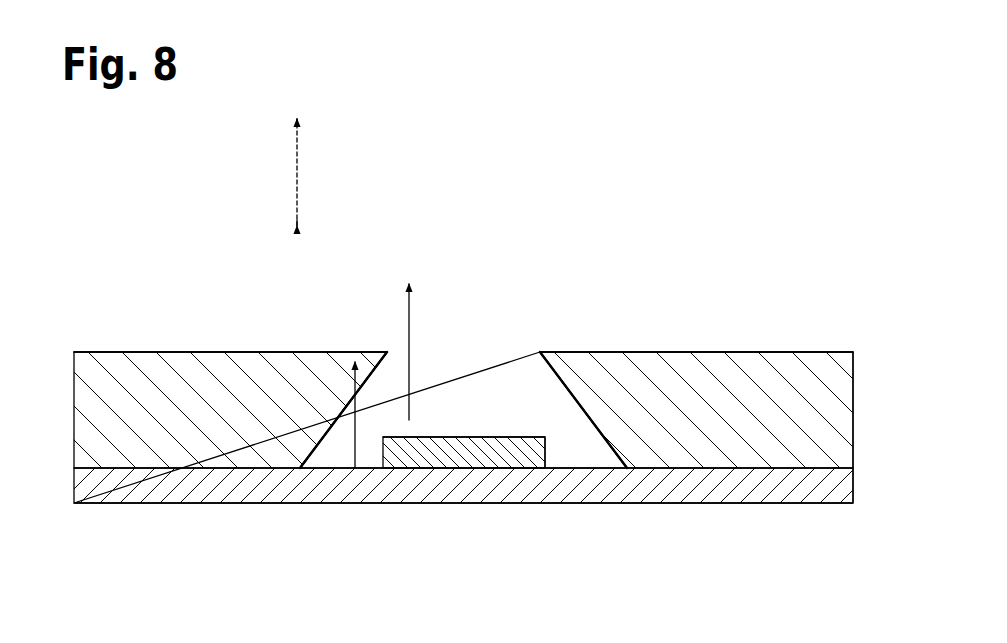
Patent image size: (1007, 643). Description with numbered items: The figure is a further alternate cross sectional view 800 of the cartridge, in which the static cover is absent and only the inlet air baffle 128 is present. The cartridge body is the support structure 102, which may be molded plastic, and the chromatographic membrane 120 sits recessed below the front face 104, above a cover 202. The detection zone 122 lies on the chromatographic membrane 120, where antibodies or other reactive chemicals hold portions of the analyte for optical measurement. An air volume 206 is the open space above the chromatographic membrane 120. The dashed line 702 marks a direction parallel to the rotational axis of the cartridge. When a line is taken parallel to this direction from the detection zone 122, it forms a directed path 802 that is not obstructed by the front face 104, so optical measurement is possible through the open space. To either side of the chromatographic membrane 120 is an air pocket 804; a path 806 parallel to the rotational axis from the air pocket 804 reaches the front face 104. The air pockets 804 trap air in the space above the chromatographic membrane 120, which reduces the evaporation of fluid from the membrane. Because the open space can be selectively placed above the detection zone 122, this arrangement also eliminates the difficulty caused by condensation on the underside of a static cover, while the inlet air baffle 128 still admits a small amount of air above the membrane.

The cross sectional view 800 is at (113, 281).
The direction parallel to rotational axis 702 is at (297, 167).
The directed path 802 is at (410, 340).
The inlet air baffle 128 is at (488, 352).
The air volume 206 is at (503, 385).
The support structure 102 is at (727, 373).
The front face 104 is at (815, 348).
The path 806 is at (353, 422).
The air pocket 804 is at (327, 455).
The chromatographic membrane 120 is at (425, 455).
The detection zone 122 is at (501, 455).
The cover 202 is at (738, 485).